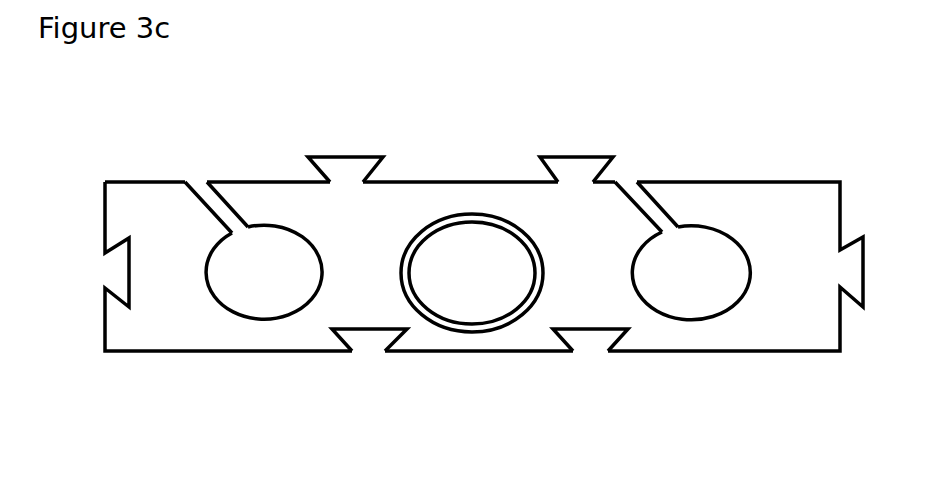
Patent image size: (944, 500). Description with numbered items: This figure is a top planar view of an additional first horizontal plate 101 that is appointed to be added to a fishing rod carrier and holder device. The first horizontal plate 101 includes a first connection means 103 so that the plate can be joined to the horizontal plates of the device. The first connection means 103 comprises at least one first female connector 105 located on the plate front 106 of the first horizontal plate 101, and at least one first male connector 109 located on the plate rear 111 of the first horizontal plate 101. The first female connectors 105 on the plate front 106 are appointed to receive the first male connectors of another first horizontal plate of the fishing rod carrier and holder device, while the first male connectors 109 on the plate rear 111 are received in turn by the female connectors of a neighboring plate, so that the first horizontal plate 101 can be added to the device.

The first horizontal plate 101 is at (780, 333).
The first connection means 103 is at (597, 345).
The first female connector 105 is at (368, 343).
The plate front 106 is at (472, 355).
The first male connector 109 is at (345, 162).
The plate rear 111 is at (472, 183).